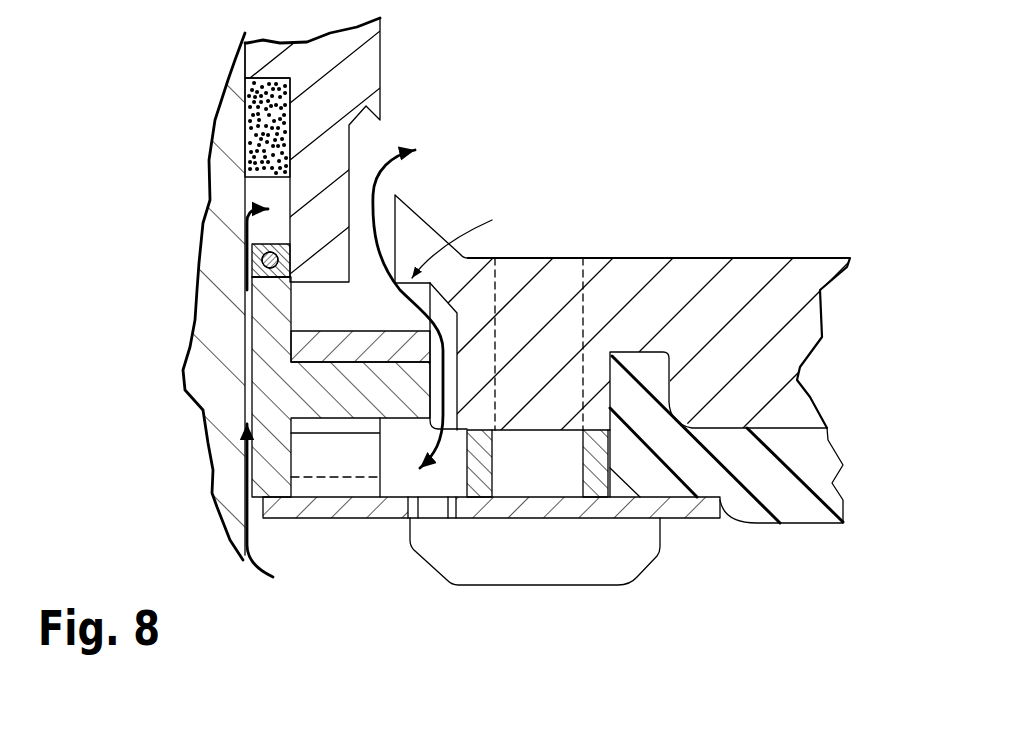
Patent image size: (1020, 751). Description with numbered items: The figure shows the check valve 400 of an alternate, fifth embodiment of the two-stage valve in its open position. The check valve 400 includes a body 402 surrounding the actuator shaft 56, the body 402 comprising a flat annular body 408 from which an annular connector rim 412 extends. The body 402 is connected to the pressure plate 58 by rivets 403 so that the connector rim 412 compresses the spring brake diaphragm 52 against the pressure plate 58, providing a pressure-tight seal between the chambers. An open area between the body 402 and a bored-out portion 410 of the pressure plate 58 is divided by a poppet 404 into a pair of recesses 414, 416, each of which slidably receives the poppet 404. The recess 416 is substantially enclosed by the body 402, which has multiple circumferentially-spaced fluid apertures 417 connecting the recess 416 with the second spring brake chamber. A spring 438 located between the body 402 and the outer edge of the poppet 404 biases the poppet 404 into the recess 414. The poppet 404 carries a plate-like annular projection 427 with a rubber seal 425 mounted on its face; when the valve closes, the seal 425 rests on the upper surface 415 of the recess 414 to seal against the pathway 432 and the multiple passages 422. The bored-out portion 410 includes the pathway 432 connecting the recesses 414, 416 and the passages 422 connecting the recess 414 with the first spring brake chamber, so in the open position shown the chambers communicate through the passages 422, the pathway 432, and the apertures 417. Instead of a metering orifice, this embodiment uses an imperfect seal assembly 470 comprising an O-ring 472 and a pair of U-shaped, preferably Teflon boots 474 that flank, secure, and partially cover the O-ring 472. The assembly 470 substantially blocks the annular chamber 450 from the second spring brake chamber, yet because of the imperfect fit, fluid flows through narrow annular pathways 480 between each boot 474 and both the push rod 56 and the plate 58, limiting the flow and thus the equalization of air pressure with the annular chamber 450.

The spring brake diaphragm 52 is at (797, 510).
The actuator shaft 56 is at (220, 172).
The pressure plate 58 is at (765, 273).
The check valve 400 is at (492, 168).
The body 402 is at (312, 526).
The rivets 403 is at (552, 567).
The poppet 404 is at (263, 372).
The annular body 408 is at (285, 512).
The bored-out portion 410 is at (537, 258).
The annular connector rim 412 is at (698, 518).
The recess 414 is at (408, 300).
The upper surface 415 is at (479, 314).
The recess 416 is at (397, 480).
The fluid apertures 417 is at (455, 515).
The passages 422 is at (365, 128).
The rubber seal 425 is at (350, 345).
The annular projection 427 is at (408, 395).
The pathway 432 is at (397, 480).
The spring 438 is at (343, 487).
The annular chamber 450 is at (263, 188).
The imperfect seal assembly 470 is at (258, 268).
The O-ring 472 is at (243, 243).
The boots 474 is at (262, 262).
The annular pathways 480 is at (244, 407).